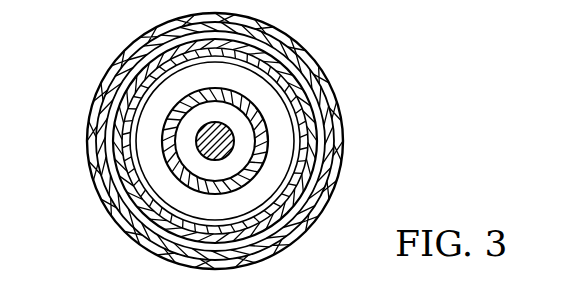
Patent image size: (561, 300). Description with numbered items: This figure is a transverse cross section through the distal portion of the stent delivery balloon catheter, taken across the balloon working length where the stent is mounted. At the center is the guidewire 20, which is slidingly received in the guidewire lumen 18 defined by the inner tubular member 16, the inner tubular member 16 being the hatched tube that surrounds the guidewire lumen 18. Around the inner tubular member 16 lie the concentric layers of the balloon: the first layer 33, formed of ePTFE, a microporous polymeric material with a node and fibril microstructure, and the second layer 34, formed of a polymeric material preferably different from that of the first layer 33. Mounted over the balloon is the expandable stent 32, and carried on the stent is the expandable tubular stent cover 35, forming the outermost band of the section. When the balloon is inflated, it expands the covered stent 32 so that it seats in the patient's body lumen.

The inner tubular member 16 is at (258, 168).
The guidewire lumen 18 is at (193, 163).
The guidewire 20 is at (227, 133).
The expandable stent 32 is at (106, 110).
The first layer 33 is at (310, 108).
The second layer 34 is at (303, 138).
The expandable tubular stent cover 35 is at (107, 73).